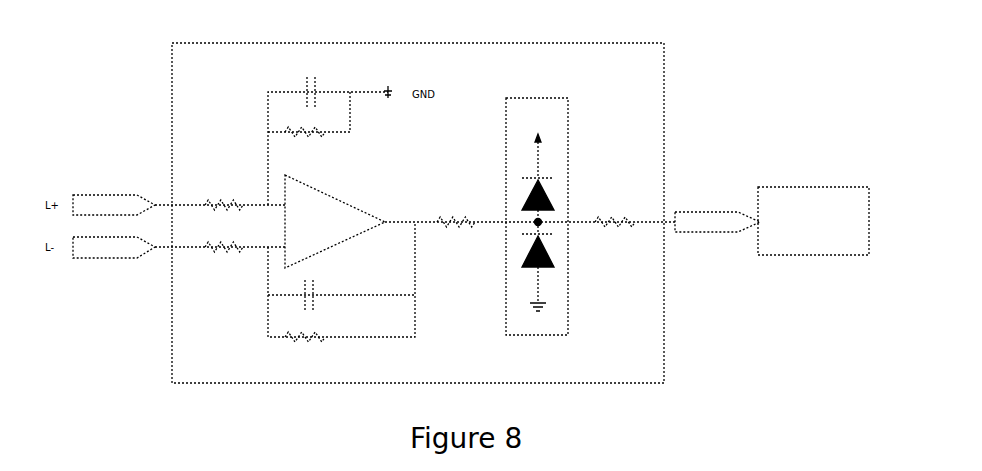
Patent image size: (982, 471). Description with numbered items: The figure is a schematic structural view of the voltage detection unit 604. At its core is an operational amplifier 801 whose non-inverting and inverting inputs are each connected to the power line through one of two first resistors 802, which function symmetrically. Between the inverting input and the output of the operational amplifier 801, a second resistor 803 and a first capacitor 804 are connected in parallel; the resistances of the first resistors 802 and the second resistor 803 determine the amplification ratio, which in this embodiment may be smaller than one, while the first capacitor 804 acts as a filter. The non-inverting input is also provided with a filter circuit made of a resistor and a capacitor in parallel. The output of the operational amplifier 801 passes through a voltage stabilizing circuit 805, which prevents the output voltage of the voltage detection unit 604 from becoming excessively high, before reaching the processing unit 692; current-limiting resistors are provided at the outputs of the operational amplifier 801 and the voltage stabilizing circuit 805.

The voltage detection unit 604 is at (645, 42).
The operational amplifier 801 is at (340, 203).
The first resistor 802 is at (221, 206).
The second resistor 803 is at (297, 343).
The first capacitor 804 is at (311, 293).
The voltage stabilizing circuit 805 is at (571, 168).
The processing unit 692 is at (840, 186).